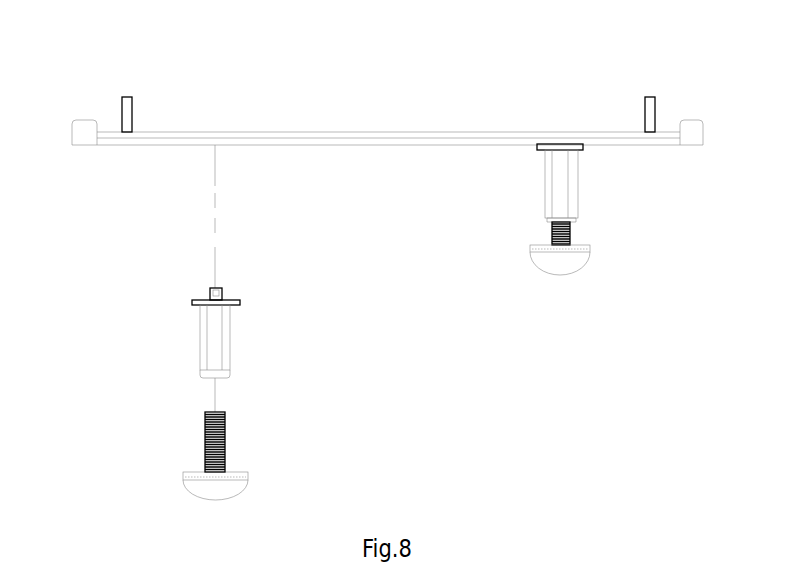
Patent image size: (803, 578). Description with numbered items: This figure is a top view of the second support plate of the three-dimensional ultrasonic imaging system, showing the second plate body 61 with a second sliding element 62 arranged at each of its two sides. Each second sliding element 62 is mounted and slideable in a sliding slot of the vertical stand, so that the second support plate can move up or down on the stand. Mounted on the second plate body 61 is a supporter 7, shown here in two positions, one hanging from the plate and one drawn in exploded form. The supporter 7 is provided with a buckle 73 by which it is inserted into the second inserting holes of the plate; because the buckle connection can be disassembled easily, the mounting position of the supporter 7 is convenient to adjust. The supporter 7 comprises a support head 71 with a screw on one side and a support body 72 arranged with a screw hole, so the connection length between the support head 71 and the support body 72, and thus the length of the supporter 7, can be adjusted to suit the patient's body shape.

The second plate body 61 is at (280, 130).
The second sliding element 62 is at (128, 112).
The supporter 7 is at (565, 268).
The support head 71 is at (218, 448).
The support body 72 is at (218, 363).
The buckle 73 is at (212, 287).